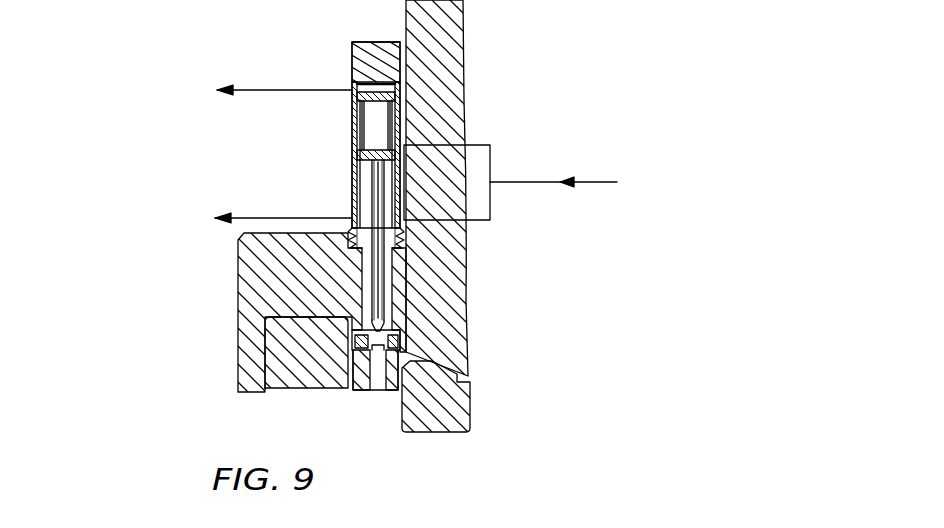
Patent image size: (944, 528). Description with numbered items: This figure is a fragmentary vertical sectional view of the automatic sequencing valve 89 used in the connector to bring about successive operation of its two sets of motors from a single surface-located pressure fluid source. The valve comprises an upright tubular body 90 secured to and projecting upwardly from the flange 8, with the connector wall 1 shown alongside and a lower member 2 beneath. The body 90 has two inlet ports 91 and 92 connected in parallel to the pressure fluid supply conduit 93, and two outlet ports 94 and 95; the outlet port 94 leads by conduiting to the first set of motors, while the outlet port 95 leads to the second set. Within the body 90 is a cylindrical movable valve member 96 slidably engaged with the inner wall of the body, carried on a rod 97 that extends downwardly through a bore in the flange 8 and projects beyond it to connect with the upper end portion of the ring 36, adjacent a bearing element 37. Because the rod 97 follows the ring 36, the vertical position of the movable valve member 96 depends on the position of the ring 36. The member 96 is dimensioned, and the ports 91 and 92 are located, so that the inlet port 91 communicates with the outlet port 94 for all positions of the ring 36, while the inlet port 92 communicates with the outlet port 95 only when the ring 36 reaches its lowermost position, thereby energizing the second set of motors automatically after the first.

The wall 1 is at (466, 32).
The lower member 2 is at (474, 418).
The flange 8 is at (240, 281).
The ring 36 is at (375, 389).
The bearing member 37 is at (303, 389).
The automatic sequencing valve 89 is at (351, 66).
The tubular body 90 is at (352, 176).
The inlet port 91 is at (410, 233).
The inlet port 92 is at (398, 140).
The pressure fluid supply conduit 93 is at (546, 183).
The outlet port 94 is at (352, 213).
The outlet port 95 is at (352, 96).
The movable valve member 96 is at (352, 129).
The rod 97 is at (388, 283).